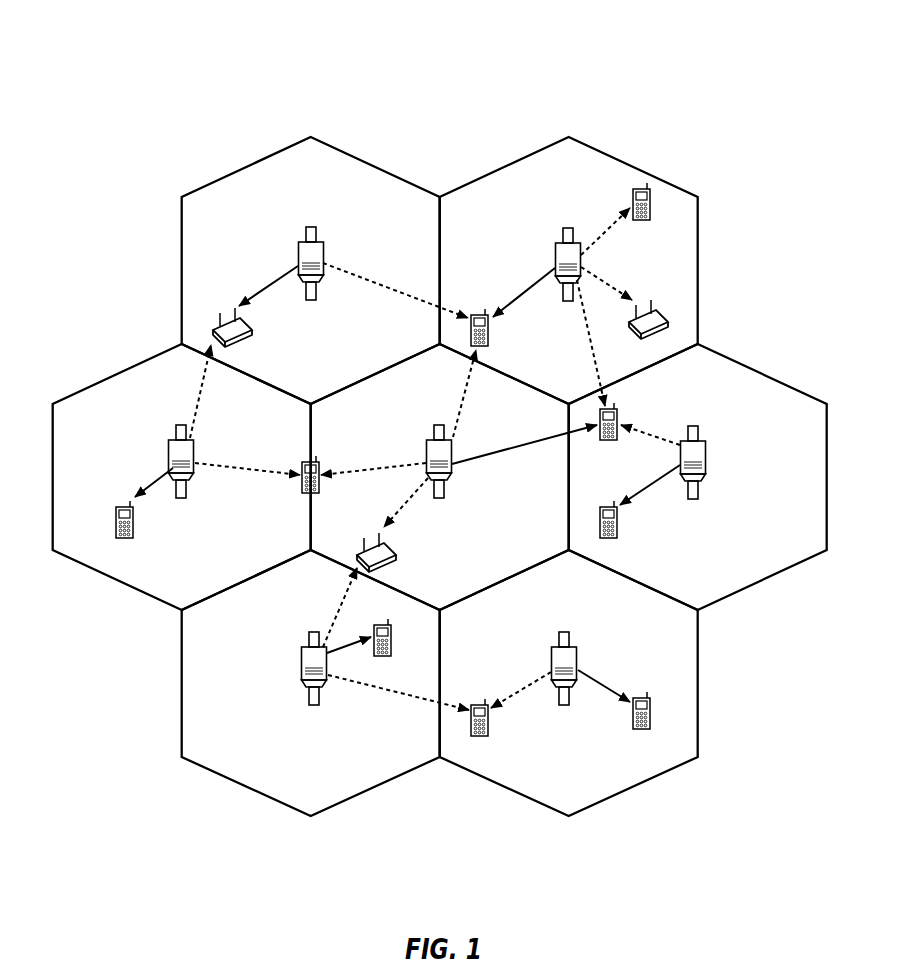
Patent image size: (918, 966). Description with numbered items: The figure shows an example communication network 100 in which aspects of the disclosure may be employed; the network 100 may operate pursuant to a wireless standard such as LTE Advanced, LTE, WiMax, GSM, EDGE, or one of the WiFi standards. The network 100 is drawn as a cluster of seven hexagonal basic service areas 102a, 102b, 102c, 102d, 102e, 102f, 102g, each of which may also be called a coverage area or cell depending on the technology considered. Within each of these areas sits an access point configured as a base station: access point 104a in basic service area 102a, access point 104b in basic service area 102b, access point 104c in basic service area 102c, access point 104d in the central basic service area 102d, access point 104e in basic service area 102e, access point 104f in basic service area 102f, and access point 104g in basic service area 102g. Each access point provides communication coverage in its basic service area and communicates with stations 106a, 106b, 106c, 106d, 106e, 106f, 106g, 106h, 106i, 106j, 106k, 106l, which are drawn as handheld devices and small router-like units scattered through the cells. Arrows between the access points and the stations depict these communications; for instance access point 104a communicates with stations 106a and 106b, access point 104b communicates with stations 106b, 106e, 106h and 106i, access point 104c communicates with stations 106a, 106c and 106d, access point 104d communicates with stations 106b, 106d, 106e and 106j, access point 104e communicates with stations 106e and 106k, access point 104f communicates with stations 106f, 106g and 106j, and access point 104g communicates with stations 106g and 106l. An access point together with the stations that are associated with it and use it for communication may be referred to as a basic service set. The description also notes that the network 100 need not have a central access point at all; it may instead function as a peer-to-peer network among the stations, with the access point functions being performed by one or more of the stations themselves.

The communication network 100 is at (750, 38).
The basic service area 102a is at (245, 167).
The basic service area 102b is at (646, 157).
The basic service area 102c is at (117, 374).
The basic service area 102d is at (458, 381).
The basic service area 102e is at (773, 362).
The basic service area 102f is at (181, 688).
The basic service area 102g is at (700, 687).
The access point 104a is at (298, 245).
The access point 104b is at (555, 245).
The access point 104c is at (170, 445).
The access point 104d is at (427, 443).
The access point 104e is at (706, 443).
The access point 104f is at (303, 650).
The access point 104g is at (552, 648).
The station 106a is at (252, 323).
The station 106b is at (481, 315).
The station 106c is at (116, 517).
The station 106d is at (302, 463).
The station 106e is at (621, 413).
The station 106f is at (380, 623).
The station 106g is at (475, 705).
The station 106h is at (675, 300).
The station 106i is at (632, 192).
The station 106j is at (400, 543).
The station 106k is at (600, 507).
The station 106l is at (635, 697).